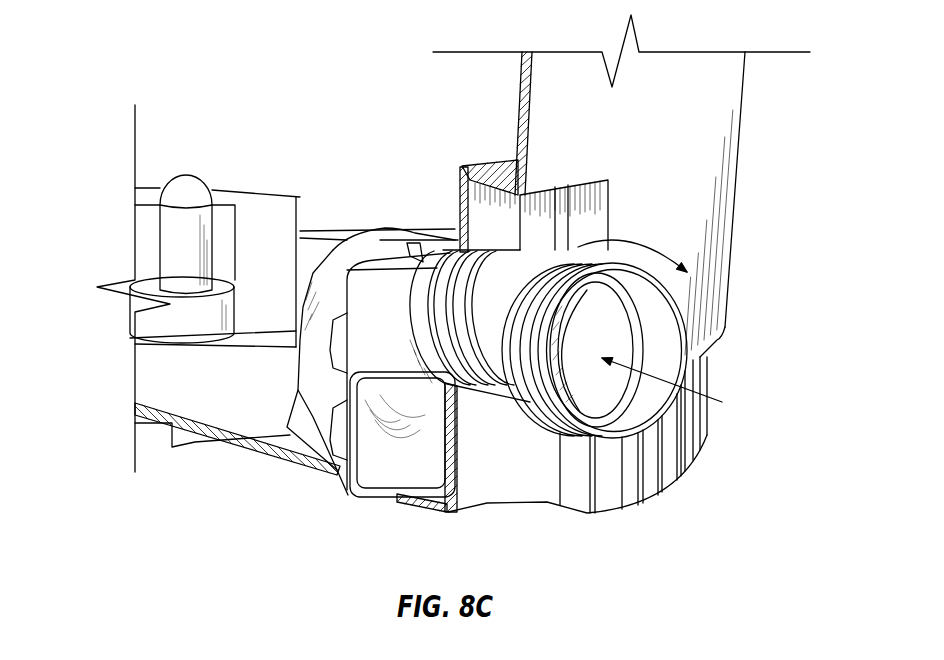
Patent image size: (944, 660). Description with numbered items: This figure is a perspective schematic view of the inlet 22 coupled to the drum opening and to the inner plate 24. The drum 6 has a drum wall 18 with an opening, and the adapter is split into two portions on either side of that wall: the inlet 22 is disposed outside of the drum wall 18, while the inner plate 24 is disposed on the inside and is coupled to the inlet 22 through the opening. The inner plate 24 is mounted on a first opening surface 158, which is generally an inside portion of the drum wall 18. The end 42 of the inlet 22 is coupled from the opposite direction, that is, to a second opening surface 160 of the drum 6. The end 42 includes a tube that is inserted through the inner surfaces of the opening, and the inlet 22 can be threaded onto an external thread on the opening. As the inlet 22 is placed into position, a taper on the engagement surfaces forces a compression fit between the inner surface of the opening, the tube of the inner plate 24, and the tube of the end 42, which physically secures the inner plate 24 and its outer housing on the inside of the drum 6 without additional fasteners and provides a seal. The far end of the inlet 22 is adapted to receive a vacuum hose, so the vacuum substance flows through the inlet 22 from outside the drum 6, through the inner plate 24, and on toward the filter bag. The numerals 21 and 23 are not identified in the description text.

The drum 6 is at (740, 167).
The drum wall 18 is at (530, 123).
The connector assembly 21 is at (333, 115).
The inlet 22 is at (673, 330).
The housing corner 23 is at (722, 342).
The inner plate 24 is at (378, 297).
The end 42 is at (440, 383).
The first opening surface 158 is at (460, 178).
The second opening surface 160 is at (535, 232).